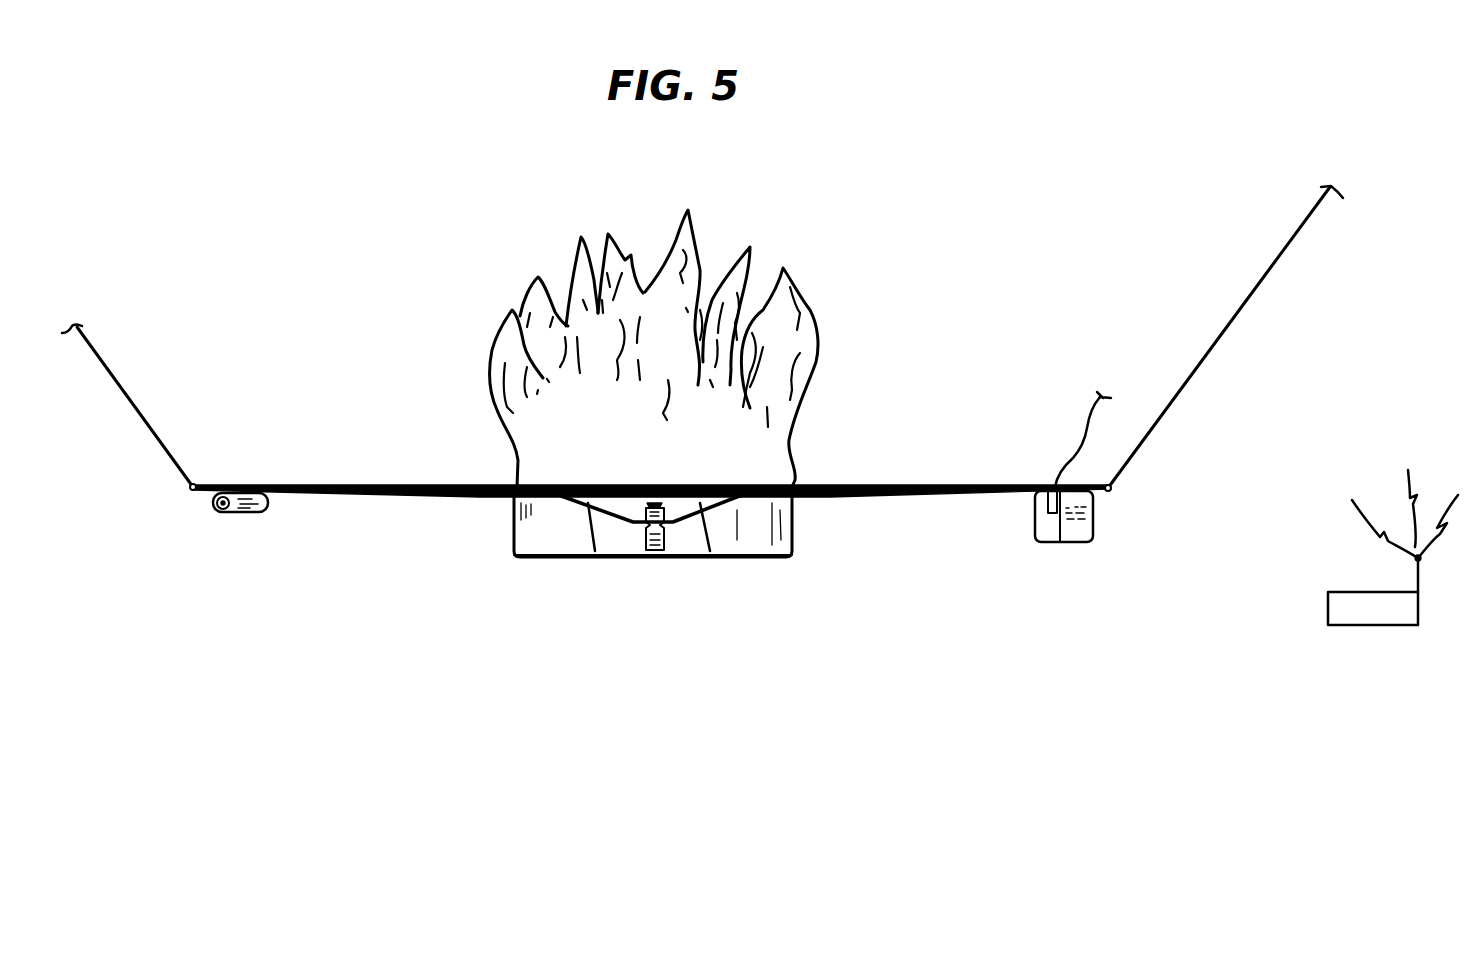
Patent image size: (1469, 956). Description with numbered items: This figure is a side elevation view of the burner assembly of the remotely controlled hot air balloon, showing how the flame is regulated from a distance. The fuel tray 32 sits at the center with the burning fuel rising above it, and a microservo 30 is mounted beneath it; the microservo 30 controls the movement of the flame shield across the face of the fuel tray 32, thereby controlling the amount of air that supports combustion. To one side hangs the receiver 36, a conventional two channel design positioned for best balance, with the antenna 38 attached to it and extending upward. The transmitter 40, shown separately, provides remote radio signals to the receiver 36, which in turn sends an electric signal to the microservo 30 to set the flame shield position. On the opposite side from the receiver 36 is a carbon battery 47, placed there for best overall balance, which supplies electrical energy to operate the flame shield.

The microservo 30 is at (665, 538).
The fuel tray 32 is at (512, 543).
The receiver 36 is at (1093, 525).
The antenna 38 is at (1093, 400).
The transmitter 40 is at (1328, 615).
The carbon battery 47 is at (250, 513).